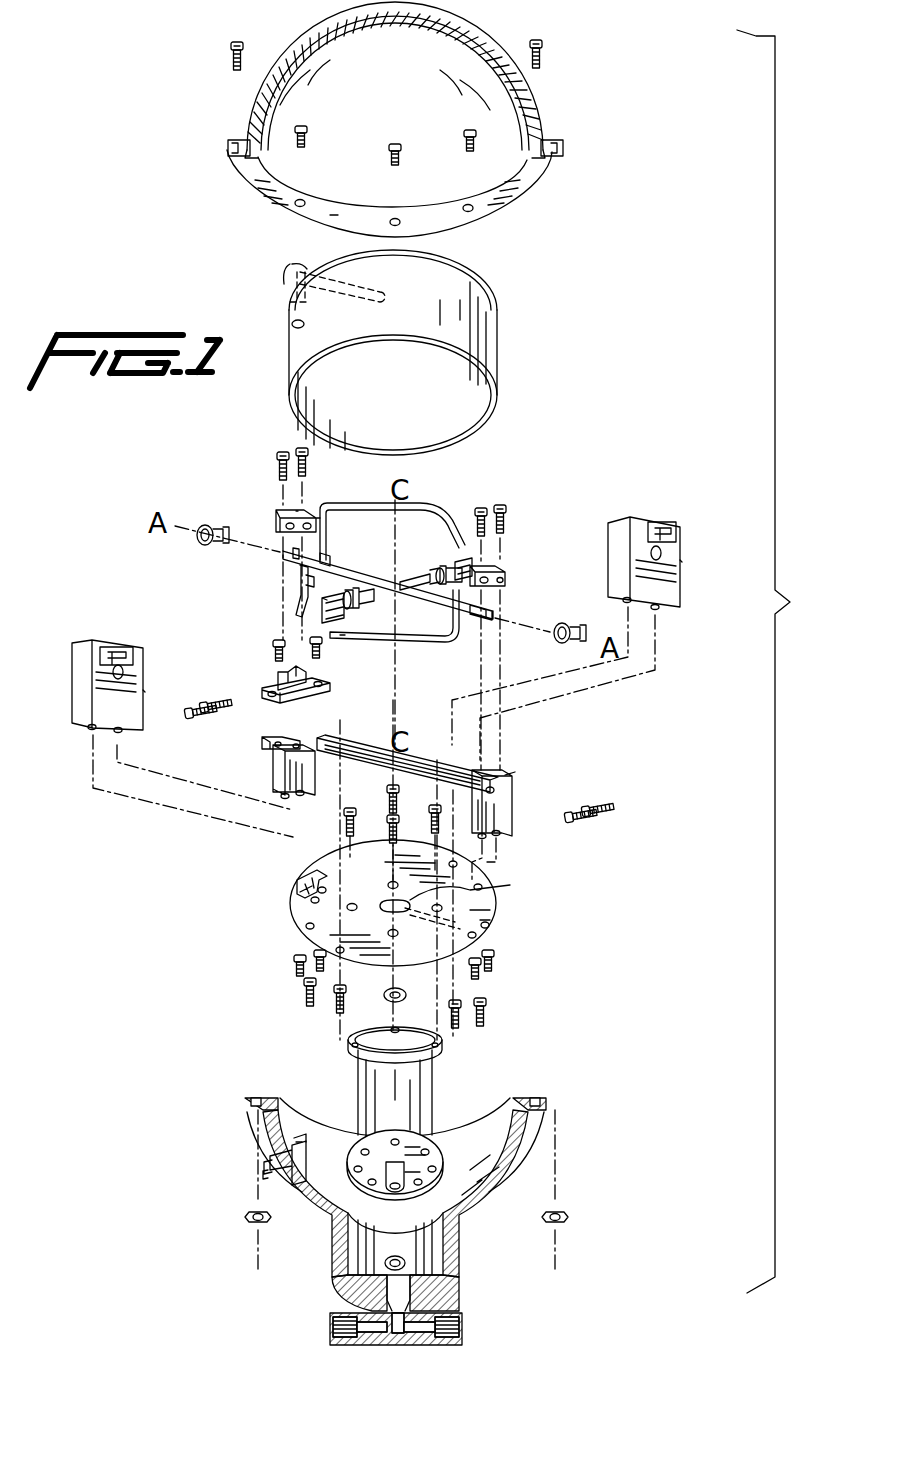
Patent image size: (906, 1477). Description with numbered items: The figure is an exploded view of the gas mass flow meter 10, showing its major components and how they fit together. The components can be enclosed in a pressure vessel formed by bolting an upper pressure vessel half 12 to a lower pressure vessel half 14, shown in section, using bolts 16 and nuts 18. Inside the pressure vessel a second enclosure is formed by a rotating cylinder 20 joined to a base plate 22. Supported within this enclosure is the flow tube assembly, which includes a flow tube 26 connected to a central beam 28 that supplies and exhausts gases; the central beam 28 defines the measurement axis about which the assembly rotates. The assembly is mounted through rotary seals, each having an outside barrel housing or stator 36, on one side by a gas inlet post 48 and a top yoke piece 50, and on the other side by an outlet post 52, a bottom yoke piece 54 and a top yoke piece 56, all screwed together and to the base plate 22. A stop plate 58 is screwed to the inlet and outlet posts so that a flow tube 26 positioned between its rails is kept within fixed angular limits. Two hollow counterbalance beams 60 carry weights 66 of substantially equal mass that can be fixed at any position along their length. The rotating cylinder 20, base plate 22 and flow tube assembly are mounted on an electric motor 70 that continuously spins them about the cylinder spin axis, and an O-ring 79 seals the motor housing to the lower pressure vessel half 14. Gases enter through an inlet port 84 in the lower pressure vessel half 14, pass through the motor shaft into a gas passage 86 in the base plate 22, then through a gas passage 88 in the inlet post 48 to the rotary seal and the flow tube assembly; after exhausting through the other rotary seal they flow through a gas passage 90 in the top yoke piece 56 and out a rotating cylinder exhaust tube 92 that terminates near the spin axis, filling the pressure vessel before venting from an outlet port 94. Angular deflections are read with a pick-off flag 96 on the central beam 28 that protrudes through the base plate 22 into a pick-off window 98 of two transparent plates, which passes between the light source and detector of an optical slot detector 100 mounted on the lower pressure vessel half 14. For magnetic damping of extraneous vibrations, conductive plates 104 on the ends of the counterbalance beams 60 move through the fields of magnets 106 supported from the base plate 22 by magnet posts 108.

The meter 10 is at (789, 661).
The upper pressure vessel half 12 is at (456, 32).
The lower pressure vessel half 14 is at (488, 1228).
The bolts 16 is at (227, 60).
The nuts 18 is at (250, 1217).
The rotating cylinder 20 is at (483, 286).
The base plate 22 is at (495, 900).
The flow tube 26 is at (387, 660).
The central beam 28 is at (457, 645).
The stator 36 is at (210, 530).
The gas inlet post 48 is at (505, 820).
The top yoke piece 50 is at (500, 562).
The outlet post 52 is at (273, 770).
The bottom yoke piece 54 is at (278, 678).
The top yoke piece 56 is at (280, 508).
The stop plate 58 is at (380, 756).
The counterbalance beams 60 is at (412, 576).
The weights 66 is at (455, 555).
The electric motor 70 is at (420, 1095).
The O-ring 79 is at (394, 1258).
The inlet port 84 is at (330, 1325).
The gas passage 86 is at (511, 888).
The gas passage 88 is at (502, 778).
The gas passage 90 is at (295, 508).
The rotating cylinder exhaust tube 92 is at (290, 269).
The outlet port 94 is at (455, 1325).
The pick-off flag 96 is at (300, 614).
The pick-off window 98 is at (297, 892).
The optical slot detector 100 is at (297, 1138).
The conductive plates 104 is at (467, 533).
The magnets 106 is at (108, 640).
The magnet posts 108 is at (143, 666).